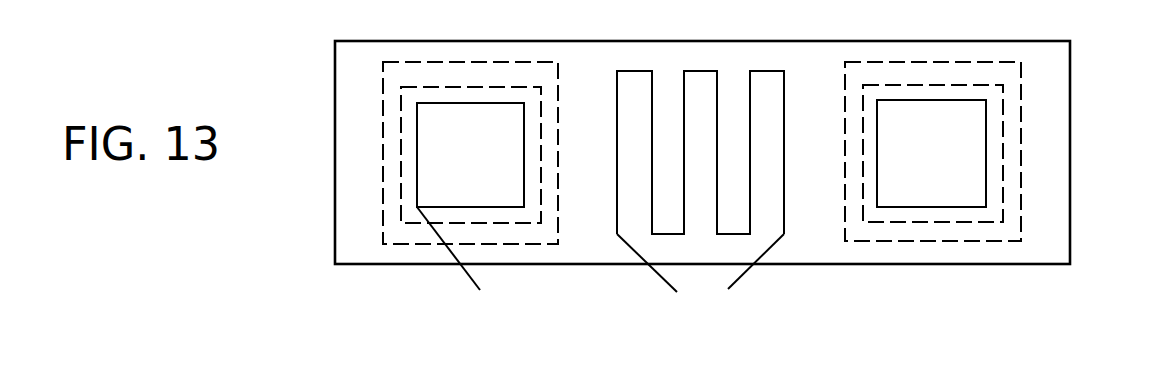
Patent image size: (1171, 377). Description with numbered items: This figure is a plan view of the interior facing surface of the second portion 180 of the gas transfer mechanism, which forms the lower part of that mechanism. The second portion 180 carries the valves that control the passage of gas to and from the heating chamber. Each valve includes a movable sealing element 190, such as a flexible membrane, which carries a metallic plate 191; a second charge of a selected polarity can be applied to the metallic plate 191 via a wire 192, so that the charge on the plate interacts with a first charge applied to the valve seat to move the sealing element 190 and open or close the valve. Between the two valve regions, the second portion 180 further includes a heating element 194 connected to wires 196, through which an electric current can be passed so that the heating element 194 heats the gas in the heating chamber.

The second portion 180 is at (1054, 82).
The movable sealing element 190 is at (383, 172).
The metallic plate 191 is at (453, 187).
The wire 192 is at (468, 281).
The heating element 194 is at (718, 80).
The wires 196 is at (730, 288).